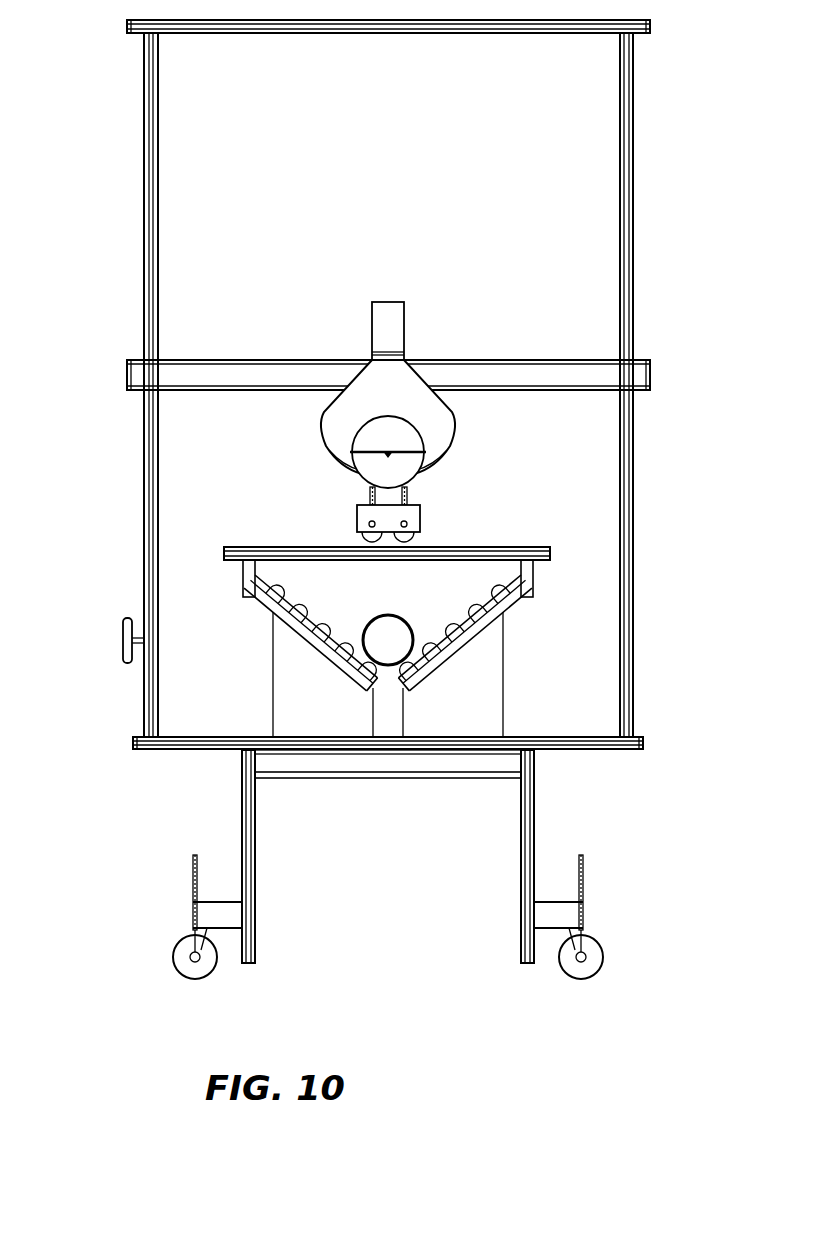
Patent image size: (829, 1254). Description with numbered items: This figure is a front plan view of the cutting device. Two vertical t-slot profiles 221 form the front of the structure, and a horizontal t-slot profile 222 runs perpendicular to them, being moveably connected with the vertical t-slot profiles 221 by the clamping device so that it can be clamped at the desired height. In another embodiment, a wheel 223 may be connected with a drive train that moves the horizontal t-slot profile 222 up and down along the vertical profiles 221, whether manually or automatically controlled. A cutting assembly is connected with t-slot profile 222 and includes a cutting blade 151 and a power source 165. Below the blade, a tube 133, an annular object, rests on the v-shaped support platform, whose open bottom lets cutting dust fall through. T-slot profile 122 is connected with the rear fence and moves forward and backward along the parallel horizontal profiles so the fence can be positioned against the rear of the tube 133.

The T-slot profile 122 is at (512, 546).
The tube 133 is at (414, 619).
The cutting blade 151 is at (405, 463).
The power source 165 is at (405, 316).
The vertical t-slot profiles 221 is at (635, 521).
The T-slot profile 222 is at (282, 358).
The wheel 223 is at (122, 655).